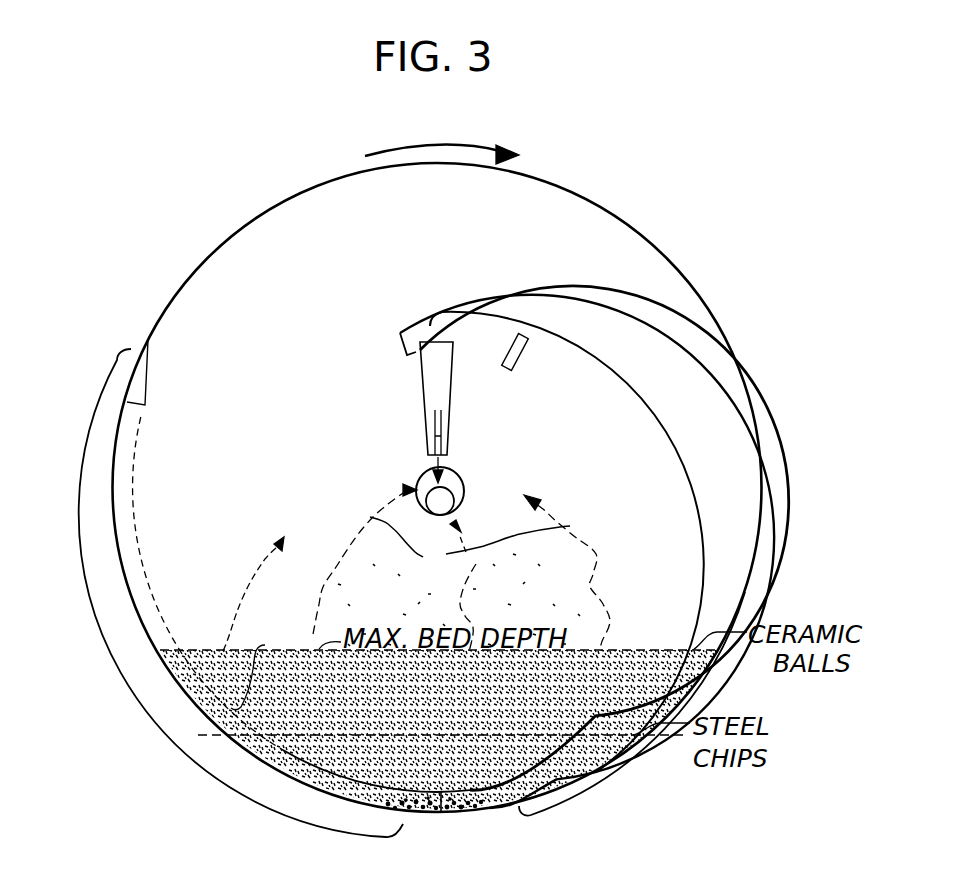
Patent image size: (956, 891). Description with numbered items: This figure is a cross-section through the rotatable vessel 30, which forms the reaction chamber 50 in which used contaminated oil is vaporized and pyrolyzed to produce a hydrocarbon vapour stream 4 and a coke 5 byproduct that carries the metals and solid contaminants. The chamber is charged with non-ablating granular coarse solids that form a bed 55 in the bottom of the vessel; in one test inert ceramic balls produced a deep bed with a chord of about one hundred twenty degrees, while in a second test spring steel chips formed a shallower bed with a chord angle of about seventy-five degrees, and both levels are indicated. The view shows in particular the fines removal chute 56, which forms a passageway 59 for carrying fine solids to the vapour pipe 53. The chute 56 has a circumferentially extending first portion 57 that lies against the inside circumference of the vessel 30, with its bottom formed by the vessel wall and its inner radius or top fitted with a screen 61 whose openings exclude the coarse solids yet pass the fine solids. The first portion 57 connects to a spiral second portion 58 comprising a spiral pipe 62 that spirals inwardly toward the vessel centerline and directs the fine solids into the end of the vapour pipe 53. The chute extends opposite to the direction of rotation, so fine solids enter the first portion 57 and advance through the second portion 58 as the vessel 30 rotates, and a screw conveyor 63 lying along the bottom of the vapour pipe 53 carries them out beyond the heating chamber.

The rotatable vessel 30 is at (675, 265).
The reaction chamber 50 is at (457, 269).
The first portion 57 is at (92, 620).
The chute 56 is at (409, 336).
The passageway 59 is at (643, 473).
The spiral pipe 62 is at (590, 408).
The second portion 58 is at (670, 434).
The coke 5 is at (449, 438).
The vapour pipe 53 is at (422, 475).
The screw conveyor 63 is at (464, 491).
The hydrocarbon vapour stream 4 is at (459, 581).
The bed 55 is at (553, 712).
The screen 61 is at (137, 520).